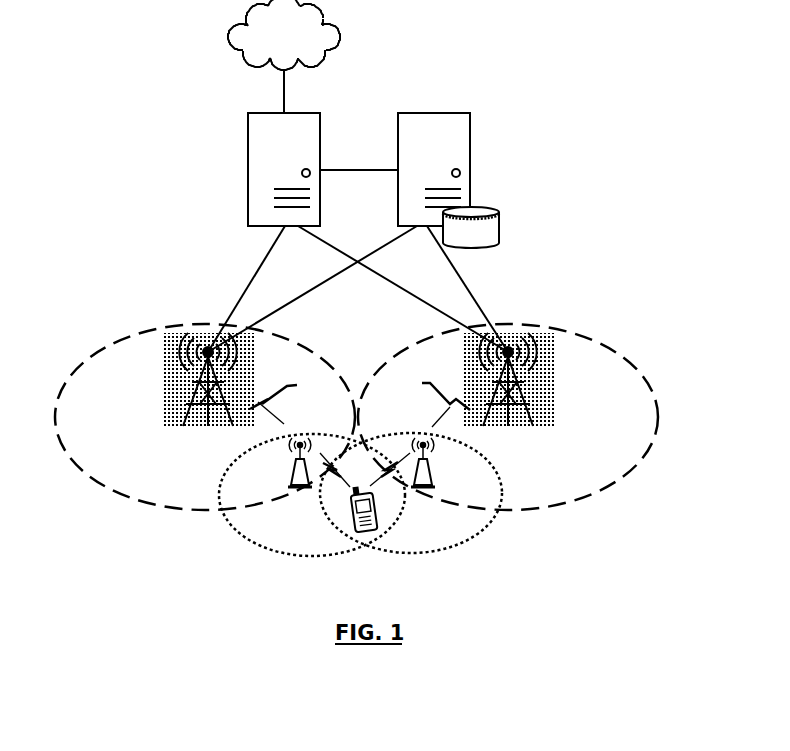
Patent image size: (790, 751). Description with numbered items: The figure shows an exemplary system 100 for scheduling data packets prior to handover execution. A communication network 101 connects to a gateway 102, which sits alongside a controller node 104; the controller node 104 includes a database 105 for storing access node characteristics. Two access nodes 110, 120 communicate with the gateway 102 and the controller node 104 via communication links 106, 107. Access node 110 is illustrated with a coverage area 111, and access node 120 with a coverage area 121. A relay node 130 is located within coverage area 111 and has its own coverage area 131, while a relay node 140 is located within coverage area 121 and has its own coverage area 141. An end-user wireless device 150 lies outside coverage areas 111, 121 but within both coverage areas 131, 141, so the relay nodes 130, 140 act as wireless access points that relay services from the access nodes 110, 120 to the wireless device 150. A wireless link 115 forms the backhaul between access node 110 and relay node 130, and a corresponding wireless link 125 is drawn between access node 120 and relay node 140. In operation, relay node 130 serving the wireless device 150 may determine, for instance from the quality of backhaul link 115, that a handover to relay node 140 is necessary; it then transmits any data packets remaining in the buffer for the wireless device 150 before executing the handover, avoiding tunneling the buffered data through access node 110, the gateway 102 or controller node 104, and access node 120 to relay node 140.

The system 100 is at (480, 30).
The communication network 101 is at (304, 43).
The gateway 102 is at (247, 169).
The controller node 104 is at (471, 169).
The database 105 is at (508, 224).
The communication link 106 is at (358, 289).
The communication link 107 is at (358, 289).
The access node 110 is at (180, 380).
The coverage area 111 is at (205, 417).
The wireless link 115 is at (297, 398).
The access node 120 is at (537, 380).
The coverage area 121 is at (508, 417).
The wireless link 125 is at (422, 399).
The relay node 130 is at (268, 462).
The coverage area 131 is at (291, 498).
The relay node 140 is at (458, 462).
The coverage area 141 is at (436, 493).
The end-user wireless device 150 is at (330, 516).